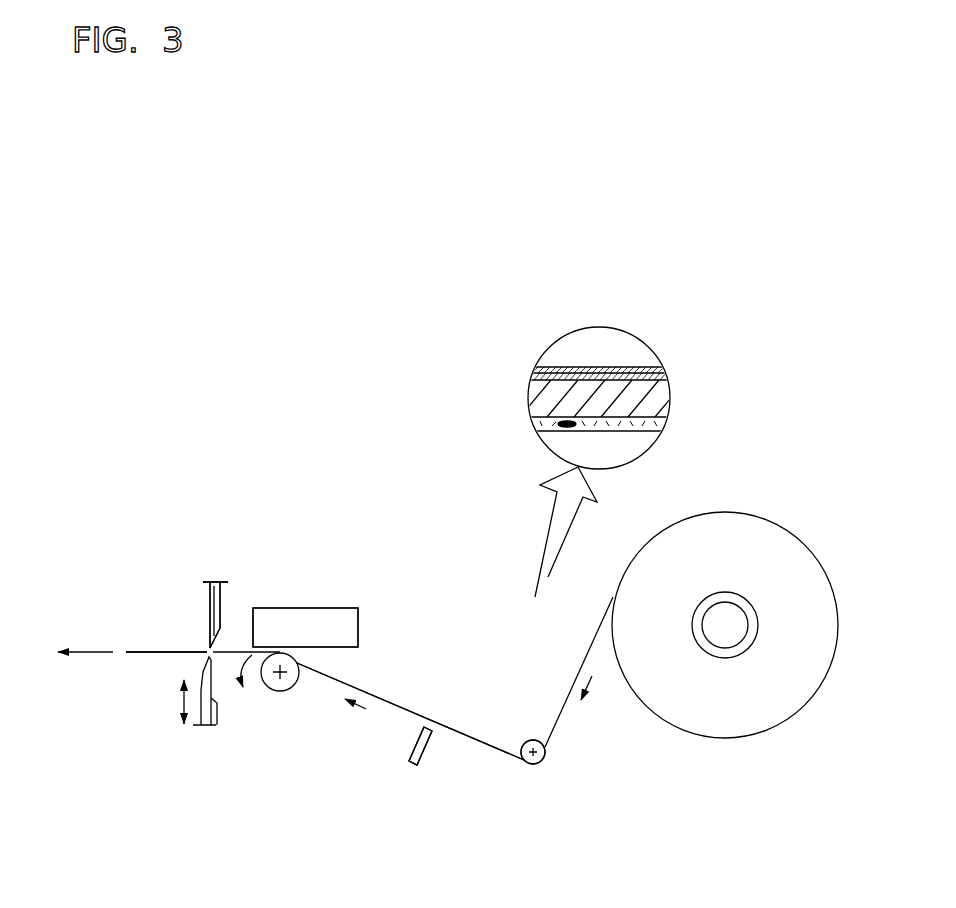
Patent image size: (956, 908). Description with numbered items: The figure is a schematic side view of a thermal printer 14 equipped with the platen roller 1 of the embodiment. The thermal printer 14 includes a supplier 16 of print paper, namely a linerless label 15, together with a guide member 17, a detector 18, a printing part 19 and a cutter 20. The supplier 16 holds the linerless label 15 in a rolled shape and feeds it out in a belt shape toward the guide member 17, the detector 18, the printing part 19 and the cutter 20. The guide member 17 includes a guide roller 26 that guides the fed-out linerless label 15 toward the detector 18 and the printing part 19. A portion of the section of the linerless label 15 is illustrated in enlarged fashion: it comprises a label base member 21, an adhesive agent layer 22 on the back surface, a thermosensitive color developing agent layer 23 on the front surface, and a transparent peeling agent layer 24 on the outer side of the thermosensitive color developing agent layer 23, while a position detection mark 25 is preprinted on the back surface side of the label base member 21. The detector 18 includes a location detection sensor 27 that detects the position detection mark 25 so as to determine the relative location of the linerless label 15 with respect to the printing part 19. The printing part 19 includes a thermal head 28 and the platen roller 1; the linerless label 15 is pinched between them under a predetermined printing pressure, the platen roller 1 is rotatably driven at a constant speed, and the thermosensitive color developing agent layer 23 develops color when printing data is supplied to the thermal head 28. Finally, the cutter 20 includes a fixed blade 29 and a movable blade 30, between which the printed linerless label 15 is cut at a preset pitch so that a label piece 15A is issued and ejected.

The platen roller 1 is at (303, 690).
The thermal printer 14 is at (463, 627).
The linerless label 15 is at (592, 644).
The label piece 15A is at (150, 652).
The supplier 16 is at (740, 662).
The guide member 17 is at (530, 775).
The detector 18 is at (428, 777).
The printing part 19 is at (296, 600).
The cutter 20 is at (219, 568).
The label base member 21 is at (668, 402).
The adhesive agent layer 22 is at (662, 425).
The thermosensitive color developing agent layer 23 is at (665, 377).
The transparent peeling agent layer 24 is at (663, 367).
The position detection mark 25 is at (542, 430).
The guide roller 26 is at (533, 740).
The location detection sensor 27 is at (427, 752).
The thermal head 28 is at (343, 607).
The fixed blade 29 is at (206, 598).
The movable blade 30 is at (220, 708).